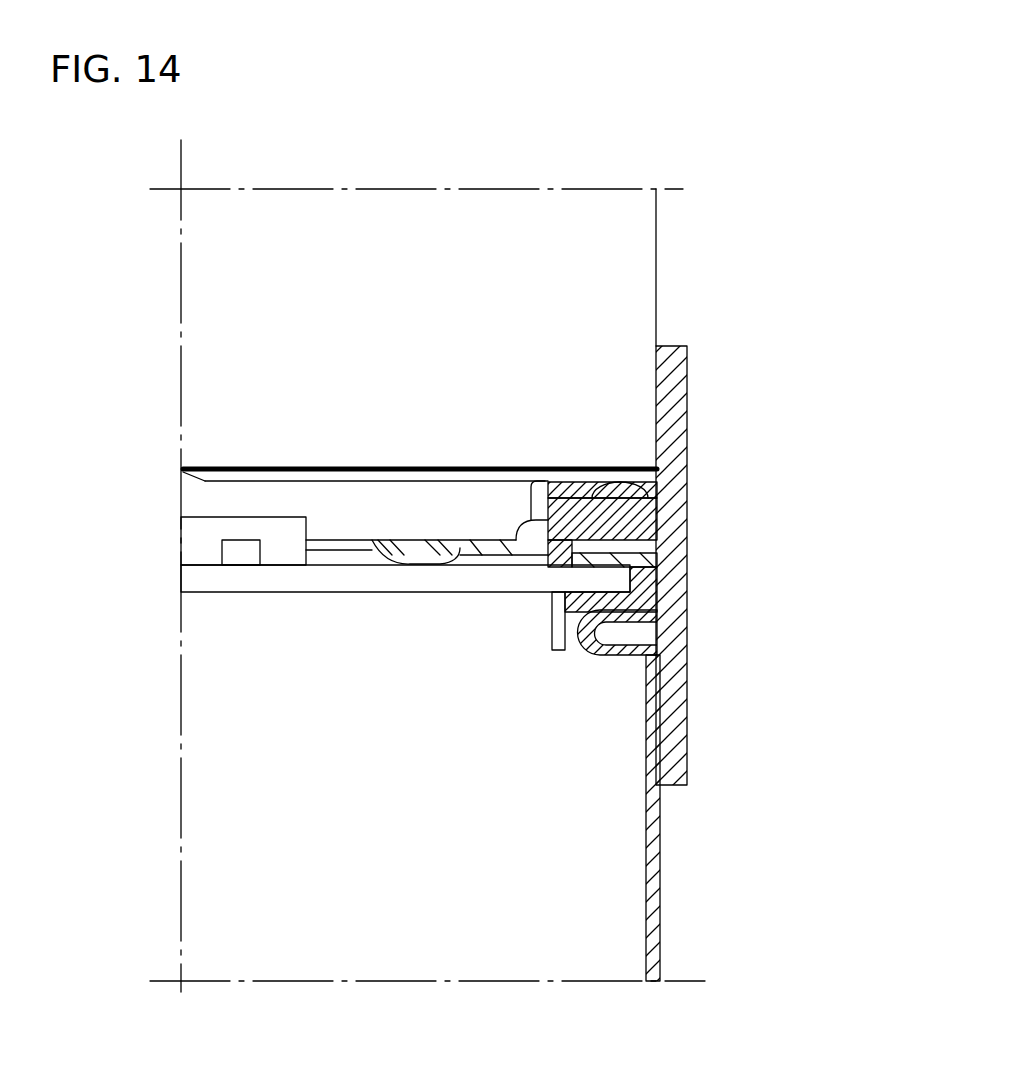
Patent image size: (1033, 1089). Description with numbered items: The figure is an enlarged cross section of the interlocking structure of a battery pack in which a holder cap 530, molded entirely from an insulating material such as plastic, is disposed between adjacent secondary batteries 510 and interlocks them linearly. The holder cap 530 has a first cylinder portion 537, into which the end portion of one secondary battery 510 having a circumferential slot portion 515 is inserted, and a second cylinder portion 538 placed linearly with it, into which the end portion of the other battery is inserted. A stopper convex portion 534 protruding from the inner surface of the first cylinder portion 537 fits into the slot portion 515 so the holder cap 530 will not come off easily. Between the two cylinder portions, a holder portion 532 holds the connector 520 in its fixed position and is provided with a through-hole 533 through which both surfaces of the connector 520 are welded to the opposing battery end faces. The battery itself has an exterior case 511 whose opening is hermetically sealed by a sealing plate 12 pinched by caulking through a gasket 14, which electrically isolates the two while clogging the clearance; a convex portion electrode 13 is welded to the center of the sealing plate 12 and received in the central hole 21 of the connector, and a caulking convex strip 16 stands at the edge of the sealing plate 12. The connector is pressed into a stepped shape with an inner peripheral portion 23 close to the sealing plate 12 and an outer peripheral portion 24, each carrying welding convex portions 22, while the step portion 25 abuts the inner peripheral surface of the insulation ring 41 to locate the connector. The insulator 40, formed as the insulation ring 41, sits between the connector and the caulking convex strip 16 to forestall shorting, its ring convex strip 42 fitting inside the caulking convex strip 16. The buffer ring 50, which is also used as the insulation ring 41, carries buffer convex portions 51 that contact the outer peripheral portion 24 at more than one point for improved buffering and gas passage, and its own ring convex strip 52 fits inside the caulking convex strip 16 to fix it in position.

The sealing plate 12 is at (297, 578).
The convex portion electrode 13 is at (190, 533).
The gasket 14 is at (660, 618).
The caulking convex strip 16 is at (650, 556).
The central hole 21 is at (357, 540).
The welding convex portions 22 is at (590, 477).
The inner peripheral portion 23 is at (378, 563).
The outer peripheral portion 24 is at (548, 478).
The step portion 25 is at (520, 545).
The insulator 40 is at (668, 472).
The insulation ring 41 is at (650, 510).
The ring convex strip 42 is at (483, 782).
The buffer ring 50 is at (838, 525).
The buffer convex portions 51 is at (562, 482).
The ring convex strip 52 is at (548, 552).
The secondary battery 510 is at (673, 247).
The exterior case 511 is at (308, 415).
The slot portion 515 is at (598, 645).
The connector 520 is at (462, 508).
The holder cap 530 is at (705, 500).
The holder portion 532 is at (672, 450).
The through-hole 533 is at (630, 462).
The stopper convex portion 534 is at (637, 660).
The first cylinder portion 537 is at (690, 745).
The second cylinder portion 538 is at (677, 373).